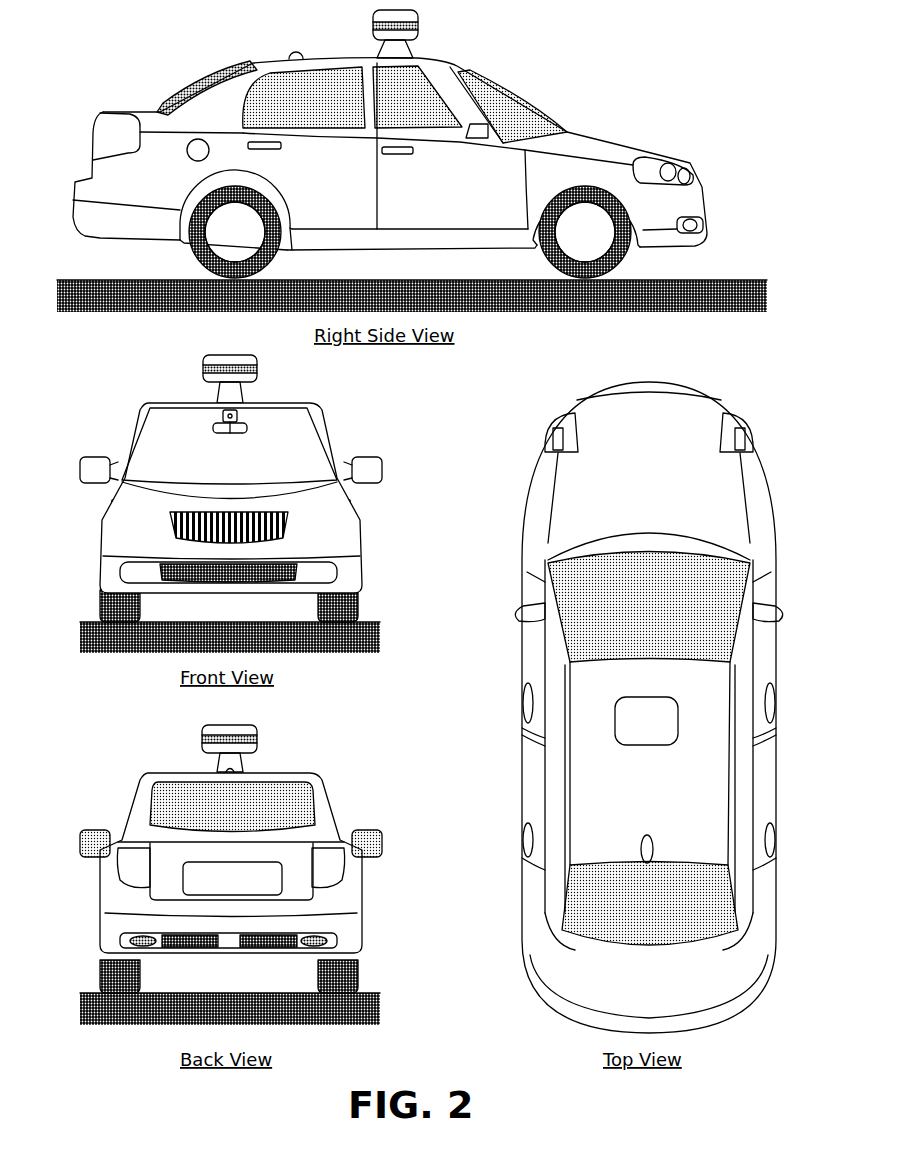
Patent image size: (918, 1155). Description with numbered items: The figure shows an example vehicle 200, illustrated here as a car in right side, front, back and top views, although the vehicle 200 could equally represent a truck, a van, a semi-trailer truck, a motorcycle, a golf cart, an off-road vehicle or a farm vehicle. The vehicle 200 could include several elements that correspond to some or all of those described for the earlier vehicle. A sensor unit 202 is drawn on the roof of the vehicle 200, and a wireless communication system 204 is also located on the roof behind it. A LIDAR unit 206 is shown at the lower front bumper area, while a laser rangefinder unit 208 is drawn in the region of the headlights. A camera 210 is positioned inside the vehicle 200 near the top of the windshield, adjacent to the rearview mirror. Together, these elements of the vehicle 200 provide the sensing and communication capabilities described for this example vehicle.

The vehicle 200 is at (67, 97).
The sensor unit 202 is at (418, 32).
The wireless communication system 204 is at (292, 52).
The LIDAR unit 206 is at (707, 226).
The laser rangefinder unit 208 is at (690, 180).
The camera 210 is at (243, 417).